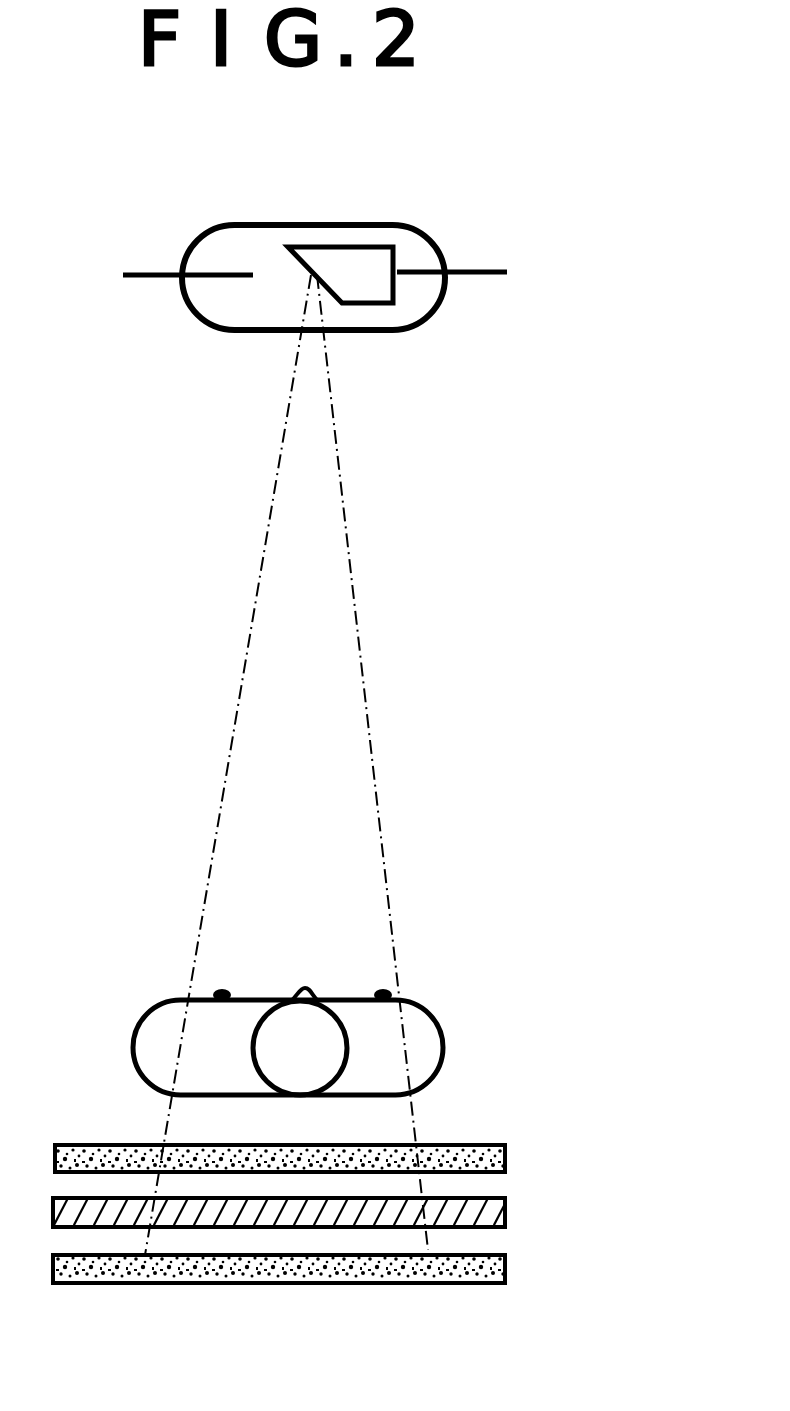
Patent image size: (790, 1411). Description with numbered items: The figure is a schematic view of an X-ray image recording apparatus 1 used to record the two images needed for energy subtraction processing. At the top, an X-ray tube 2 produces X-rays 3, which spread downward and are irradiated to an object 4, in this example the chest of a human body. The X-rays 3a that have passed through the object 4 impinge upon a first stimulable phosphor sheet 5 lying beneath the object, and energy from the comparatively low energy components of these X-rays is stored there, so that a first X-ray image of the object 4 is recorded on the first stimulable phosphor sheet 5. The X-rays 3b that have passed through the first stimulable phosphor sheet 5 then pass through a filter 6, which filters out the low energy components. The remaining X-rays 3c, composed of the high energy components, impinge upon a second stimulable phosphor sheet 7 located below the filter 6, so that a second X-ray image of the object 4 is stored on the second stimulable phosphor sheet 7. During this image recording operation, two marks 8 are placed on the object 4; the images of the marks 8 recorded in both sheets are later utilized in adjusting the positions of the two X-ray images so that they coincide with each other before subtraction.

The X-ray image recording apparatus 1 is at (546, 400).
The X-ray tube 2 is at (405, 225).
The X-rays 3 is at (349, 565).
The X-rays which have passed through the object 3a is at (417, 1118).
The X-rays which have passed through the first stimulable phosphor sheet 3b is at (423, 1188).
The X-rays which have passed through the filter 3c is at (430, 1252).
The object 4 is at (434, 1020).
The first stimulable phosphor sheet 5 is at (505, 1150).
The filter 6 is at (505, 1210).
The second stimulable phosphor sheet 7 is at (505, 1283).
The marks 8 is at (232, 988).